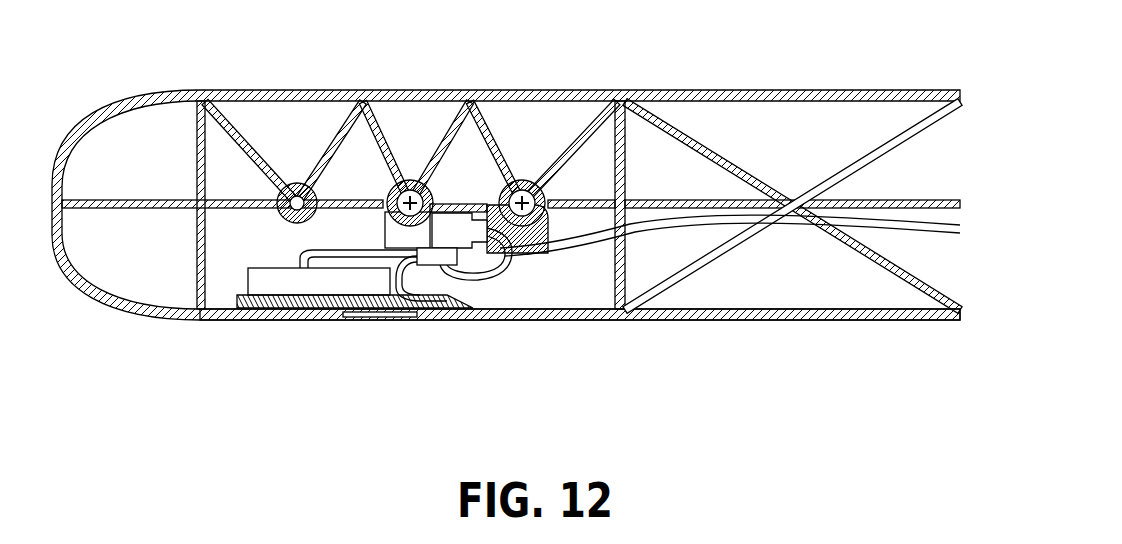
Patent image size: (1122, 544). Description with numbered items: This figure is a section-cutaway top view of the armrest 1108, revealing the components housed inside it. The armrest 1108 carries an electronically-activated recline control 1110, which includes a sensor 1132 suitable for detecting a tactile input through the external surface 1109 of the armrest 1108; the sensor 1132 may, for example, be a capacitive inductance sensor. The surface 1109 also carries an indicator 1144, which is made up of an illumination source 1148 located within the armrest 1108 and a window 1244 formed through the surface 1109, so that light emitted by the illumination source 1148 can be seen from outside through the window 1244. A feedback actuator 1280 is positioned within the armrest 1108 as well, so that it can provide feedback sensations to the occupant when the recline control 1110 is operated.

The armrest 1108 is at (140, 98).
The external surface 1109 is at (705, 320).
The electronically-activated recline control 1110 is at (236, 383).
The sensor 1132 is at (265, 268).
The indicator 1144 is at (398, 420).
The illumination source 1148 is at (447, 306).
The window 1244 is at (383, 322).
The feedback actuator 1280 is at (457, 220).